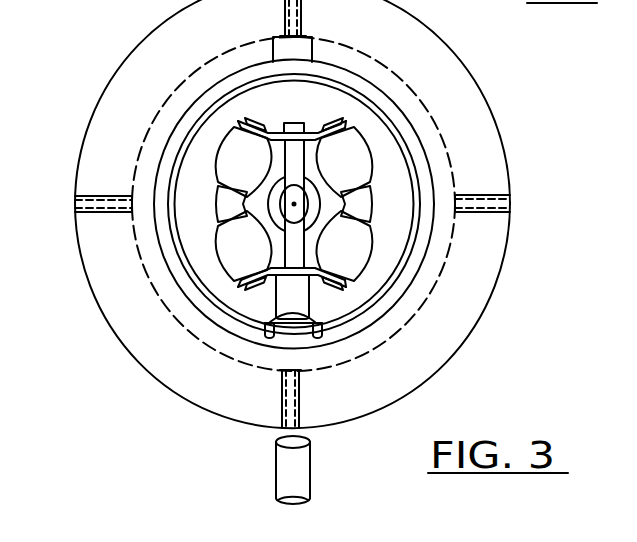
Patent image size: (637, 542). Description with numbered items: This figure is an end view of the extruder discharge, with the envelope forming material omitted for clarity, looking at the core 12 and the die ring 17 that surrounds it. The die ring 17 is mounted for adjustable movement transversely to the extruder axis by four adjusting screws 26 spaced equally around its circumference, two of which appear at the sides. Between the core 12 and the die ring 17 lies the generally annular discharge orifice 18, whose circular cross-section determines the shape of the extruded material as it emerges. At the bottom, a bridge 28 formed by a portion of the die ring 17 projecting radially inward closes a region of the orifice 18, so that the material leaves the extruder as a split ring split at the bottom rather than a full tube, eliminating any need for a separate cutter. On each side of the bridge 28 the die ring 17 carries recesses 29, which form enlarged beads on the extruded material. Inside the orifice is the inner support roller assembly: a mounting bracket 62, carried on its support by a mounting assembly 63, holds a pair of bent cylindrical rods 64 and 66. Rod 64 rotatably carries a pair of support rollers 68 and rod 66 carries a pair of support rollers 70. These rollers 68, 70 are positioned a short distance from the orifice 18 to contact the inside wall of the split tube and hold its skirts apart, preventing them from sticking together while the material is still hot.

The core 12 is at (268, 98).
The die ring 17 is at (305, 67).
The discharge orifice 18 is at (342, 88).
The adjusting screws 26 is at (103, 196).
The bridge 28 is at (281, 341).
The recesses 29 is at (315, 327).
The mounting bracket 62 is at (290, 125).
The mounting assembly 63 is at (298, 470).
The bent cylindrical rod 64 is at (228, 205).
The bent cylindrical rod 66 is at (359, 205).
The support rollers 68 is at (229, 150).
The support rollers 70 is at (382, 141).